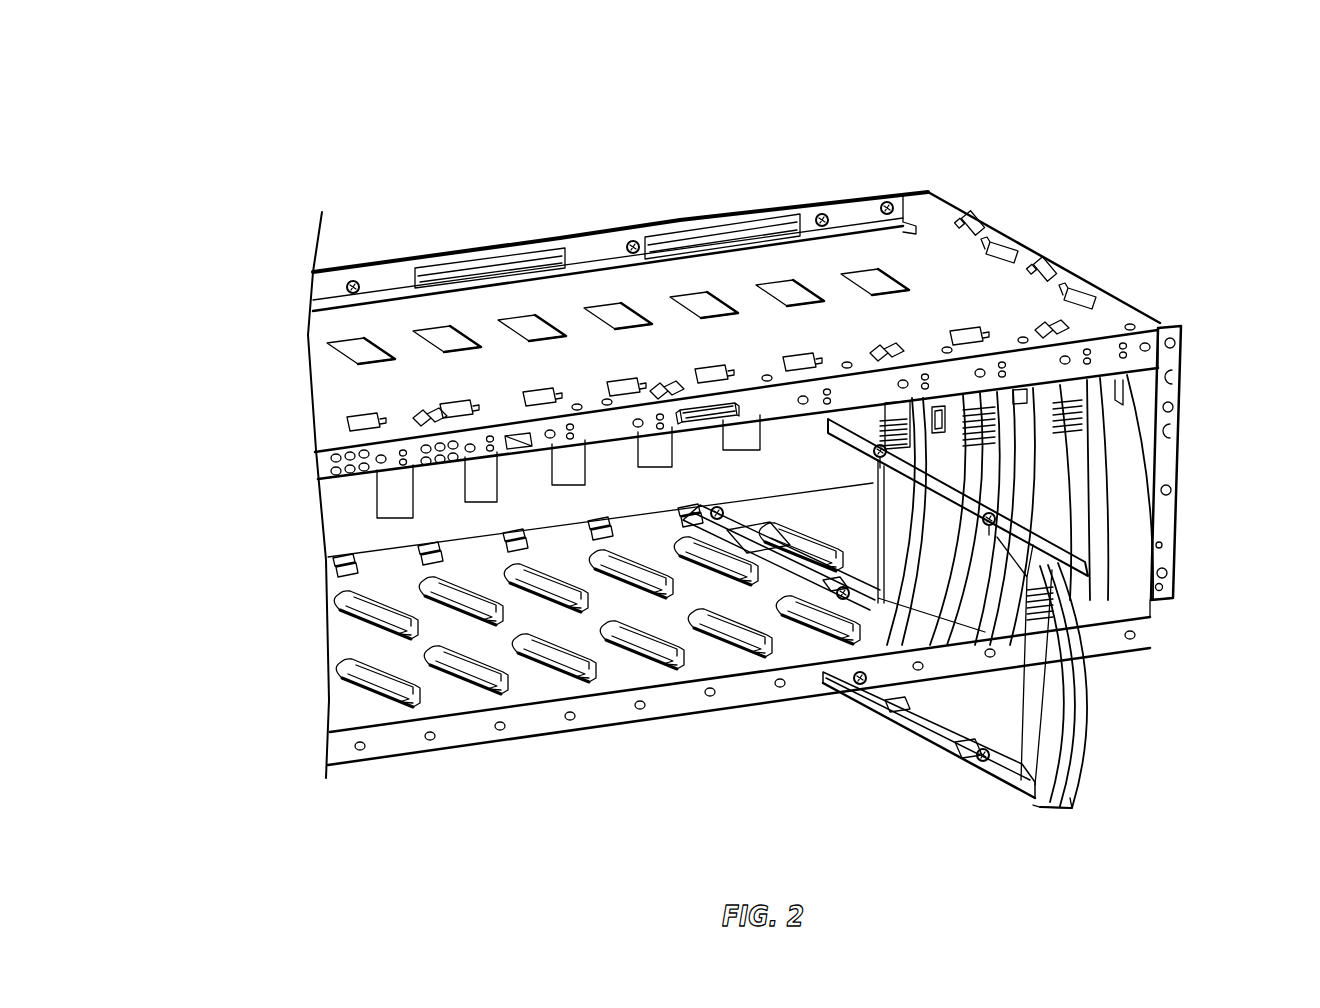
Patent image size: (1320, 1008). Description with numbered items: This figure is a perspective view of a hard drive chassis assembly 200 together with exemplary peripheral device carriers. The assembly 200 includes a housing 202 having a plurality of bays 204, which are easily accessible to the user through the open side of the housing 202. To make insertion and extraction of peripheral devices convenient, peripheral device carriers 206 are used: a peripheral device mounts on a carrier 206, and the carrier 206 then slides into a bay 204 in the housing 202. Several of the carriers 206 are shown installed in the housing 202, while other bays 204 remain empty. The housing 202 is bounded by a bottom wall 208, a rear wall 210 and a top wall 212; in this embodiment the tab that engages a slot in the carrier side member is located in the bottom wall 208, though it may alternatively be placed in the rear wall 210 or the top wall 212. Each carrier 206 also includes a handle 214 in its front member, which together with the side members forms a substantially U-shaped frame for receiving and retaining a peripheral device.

The hard drive chassis assembly 200 is at (1015, 120).
The housing 202 is at (1055, 243).
The bays 204 is at (1060, 640).
The peripheral device carriers 206 is at (1078, 755).
The bottom wall 208 is at (340, 655).
The rear wall 210 is at (330, 502).
The top wall 212 is at (330, 404).
The handle 214 is at (1033, 805).